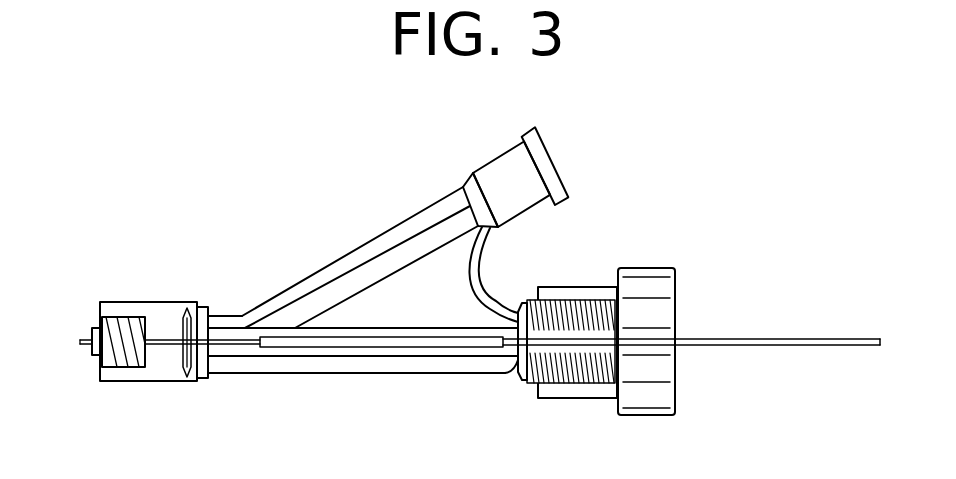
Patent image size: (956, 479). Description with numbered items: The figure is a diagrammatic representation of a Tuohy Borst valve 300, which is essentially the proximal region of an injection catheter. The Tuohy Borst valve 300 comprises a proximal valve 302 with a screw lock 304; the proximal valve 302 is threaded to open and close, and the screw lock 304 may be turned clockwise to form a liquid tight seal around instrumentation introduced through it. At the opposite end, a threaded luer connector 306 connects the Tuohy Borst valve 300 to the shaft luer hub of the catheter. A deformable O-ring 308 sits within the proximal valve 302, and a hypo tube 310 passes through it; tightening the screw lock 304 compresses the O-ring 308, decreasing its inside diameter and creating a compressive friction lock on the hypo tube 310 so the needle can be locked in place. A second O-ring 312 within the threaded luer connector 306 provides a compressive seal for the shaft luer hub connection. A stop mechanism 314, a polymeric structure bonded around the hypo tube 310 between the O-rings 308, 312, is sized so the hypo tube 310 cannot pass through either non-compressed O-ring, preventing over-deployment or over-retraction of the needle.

The Tuohy Borst valve 300 is at (325, 192).
The proximal valve 302 is at (571, 287).
The screw lock 304 is at (650, 268).
The threaded luer connector 306 is at (115, 302).
The deformable O-ring 308 is at (500, 365).
The hypo tube 310 is at (80, 345).
The second O-ring 312 is at (193, 320).
The stop mechanism 314 is at (357, 348).